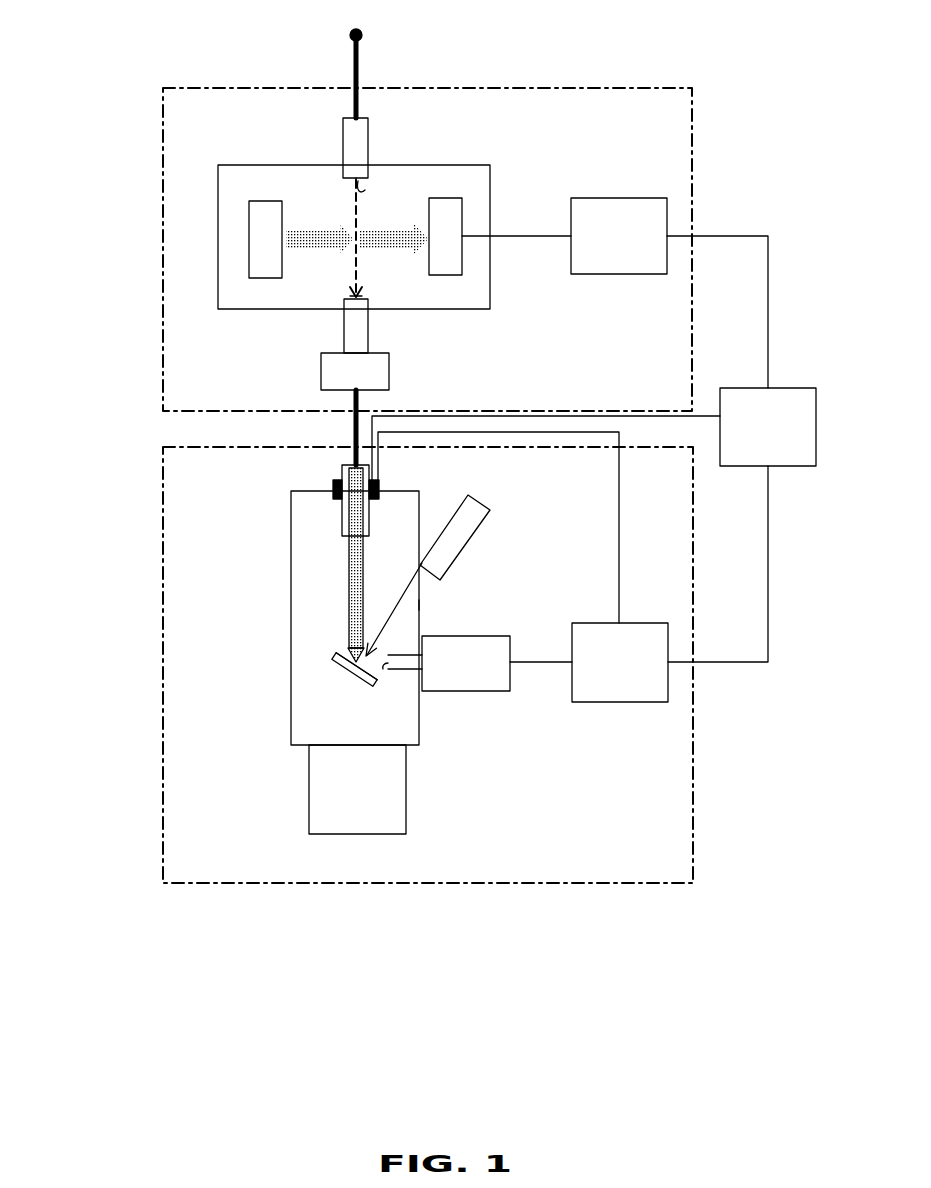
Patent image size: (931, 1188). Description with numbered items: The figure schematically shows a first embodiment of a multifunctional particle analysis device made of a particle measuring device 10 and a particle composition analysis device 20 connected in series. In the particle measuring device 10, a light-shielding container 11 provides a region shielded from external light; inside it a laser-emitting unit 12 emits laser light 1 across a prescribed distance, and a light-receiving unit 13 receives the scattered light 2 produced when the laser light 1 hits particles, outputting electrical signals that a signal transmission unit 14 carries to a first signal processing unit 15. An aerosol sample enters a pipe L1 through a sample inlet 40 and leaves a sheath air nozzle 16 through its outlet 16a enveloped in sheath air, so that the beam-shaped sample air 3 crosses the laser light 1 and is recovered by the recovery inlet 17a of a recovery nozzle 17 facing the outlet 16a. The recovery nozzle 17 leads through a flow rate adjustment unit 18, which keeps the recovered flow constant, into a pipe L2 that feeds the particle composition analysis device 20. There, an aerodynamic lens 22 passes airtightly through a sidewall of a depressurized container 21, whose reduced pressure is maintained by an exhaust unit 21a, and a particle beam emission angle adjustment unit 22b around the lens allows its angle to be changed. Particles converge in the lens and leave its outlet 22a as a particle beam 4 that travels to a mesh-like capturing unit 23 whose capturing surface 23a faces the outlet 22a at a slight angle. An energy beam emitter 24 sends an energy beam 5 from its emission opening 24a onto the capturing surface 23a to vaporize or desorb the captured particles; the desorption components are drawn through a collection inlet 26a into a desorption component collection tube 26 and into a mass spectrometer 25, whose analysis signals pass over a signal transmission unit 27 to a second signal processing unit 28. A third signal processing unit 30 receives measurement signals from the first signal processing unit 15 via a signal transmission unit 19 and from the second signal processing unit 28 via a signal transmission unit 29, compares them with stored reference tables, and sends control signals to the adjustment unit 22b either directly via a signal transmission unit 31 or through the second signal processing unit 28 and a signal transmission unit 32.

The laser light 1 is at (310, 228).
The scattered light 2 is at (365, 190).
The sample air 3 is at (352, 208).
The particle beam 4 is at (342, 570).
The energy beam 5 is at (420, 605).
The particle measuring device 10 is at (160, 247).
The light-shielding container 11 is at (218, 237).
The laser-emitting unit 12 is at (265, 200).
The light-receiving unit 13 is at (447, 197).
The signal transmission unit 14 is at (527, 236).
The first signal processing unit 15 is at (618, 198).
The sheath air nozzle 16 is at (368, 148).
The outlet 16a is at (377, 228).
The recovery nozzle 17 is at (368, 338).
The recovery inlet 17a is at (350, 290).
The flow rate adjustment unit 18 is at (389, 372).
The signal transmission unit 19 is at (735, 236).
The particle composition analysis device 20 is at (160, 583).
The depressurized container 21 is at (291, 722).
The exhaust unit 21a is at (309, 789).
The aerodynamic lens 22 is at (342, 523).
The outlet 22a is at (365, 538).
The particle beam emission angle adjustment unit 22b is at (333, 488).
The capturing unit 23 is at (327, 678).
The capturing surface 23a is at (343, 650).
The energy beam emitter 24 is at (473, 530).
The emission opening 24a is at (437, 585).
The mass spectrometer 25 is at (477, 693).
The desorption component collection tube 26 is at (407, 672).
The collection inlet 26a is at (388, 663).
The signal transmission unit 27 is at (535, 662).
The second signal processing unit 28 is at (635, 702).
The signal transmission unit 29 is at (740, 662).
The third signal processing unit 30 is at (787, 388).
The signal transmission unit 31 is at (640, 415).
The signal transmission unit 32 is at (620, 560).
The sample inlet 40 is at (350, 34).
The pipe L1 is at (350, 62).
The pipe L2 is at (353, 419).